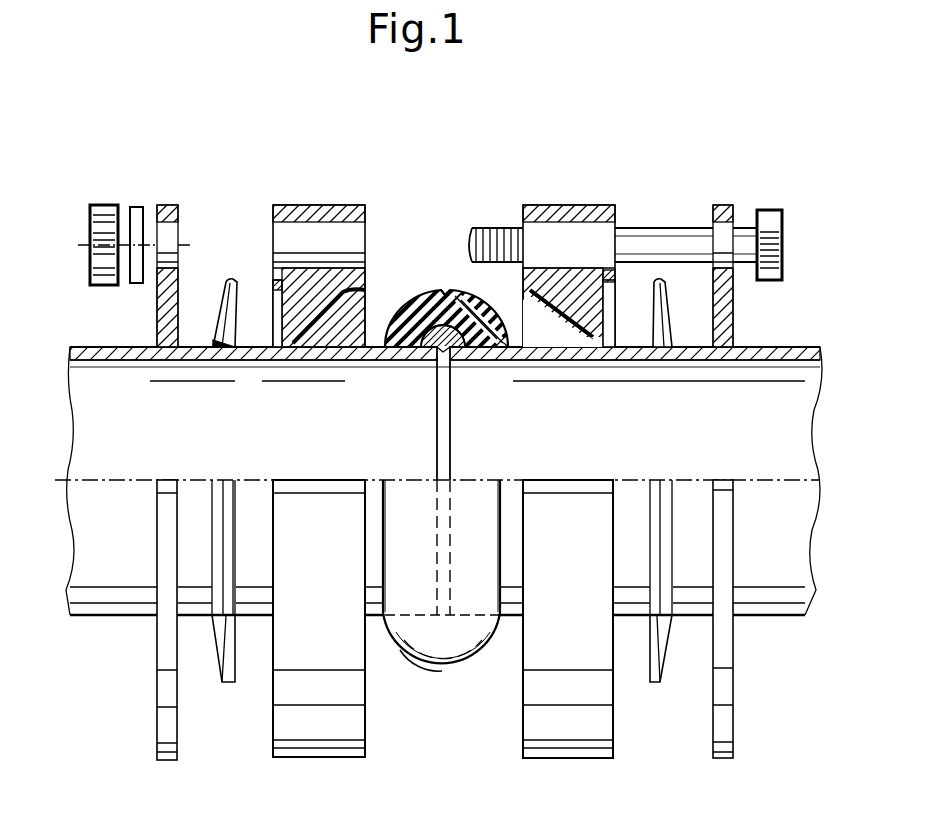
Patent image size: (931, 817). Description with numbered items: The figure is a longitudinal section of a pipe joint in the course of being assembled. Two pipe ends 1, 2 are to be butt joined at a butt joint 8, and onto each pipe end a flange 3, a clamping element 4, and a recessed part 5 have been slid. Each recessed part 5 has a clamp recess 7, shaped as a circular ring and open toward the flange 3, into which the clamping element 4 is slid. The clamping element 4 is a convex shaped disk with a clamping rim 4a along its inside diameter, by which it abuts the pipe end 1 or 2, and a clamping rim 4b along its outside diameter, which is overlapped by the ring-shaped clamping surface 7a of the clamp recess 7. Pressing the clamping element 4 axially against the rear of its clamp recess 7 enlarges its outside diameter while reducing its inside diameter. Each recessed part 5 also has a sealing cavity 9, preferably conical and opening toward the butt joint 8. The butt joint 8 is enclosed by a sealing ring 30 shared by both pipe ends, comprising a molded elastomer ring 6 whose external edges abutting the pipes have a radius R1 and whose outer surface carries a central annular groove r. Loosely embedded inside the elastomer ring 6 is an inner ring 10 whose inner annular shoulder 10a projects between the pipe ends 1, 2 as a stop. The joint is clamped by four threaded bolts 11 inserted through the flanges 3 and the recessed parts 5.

The pipe end 1 is at (80, 347).
The pipe end 2 is at (802, 347).
The flange 3 is at (172, 760).
The clamping element 4 is at (231, 687).
The clamping rim 4a is at (228, 350).
The clamping rim 4b is at (229, 278).
The recessed part 5 is at (320, 757).
The molded elastomer ring 6 is at (505, 342).
The clamp recess 7 is at (282, 327).
The clamping surface 7a is at (273, 292).
The butt joint 8 is at (438, 428).
The sealing cavity 9 is at (365, 315).
The inner ring 10 is at (430, 303).
The inner annular shoulder 10a is at (445, 353).
The threaded bolt 11 is at (684, 240).
The sealing ring 30 is at (418, 666).
The annular groove r is at (452, 287).
The radius R1 is at (519, 350).